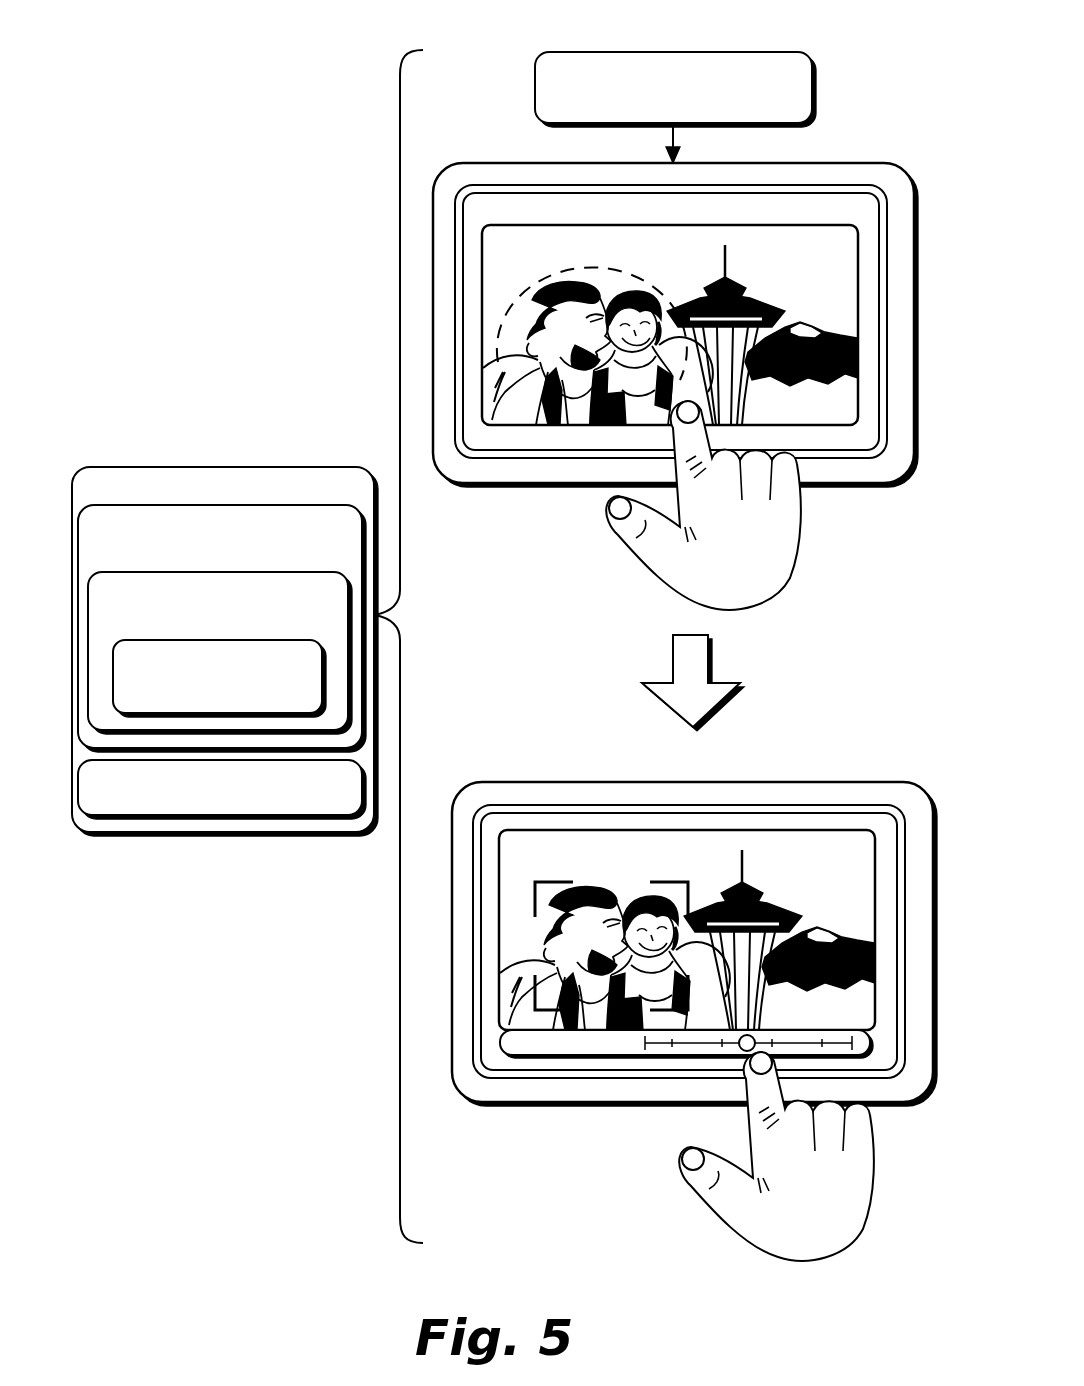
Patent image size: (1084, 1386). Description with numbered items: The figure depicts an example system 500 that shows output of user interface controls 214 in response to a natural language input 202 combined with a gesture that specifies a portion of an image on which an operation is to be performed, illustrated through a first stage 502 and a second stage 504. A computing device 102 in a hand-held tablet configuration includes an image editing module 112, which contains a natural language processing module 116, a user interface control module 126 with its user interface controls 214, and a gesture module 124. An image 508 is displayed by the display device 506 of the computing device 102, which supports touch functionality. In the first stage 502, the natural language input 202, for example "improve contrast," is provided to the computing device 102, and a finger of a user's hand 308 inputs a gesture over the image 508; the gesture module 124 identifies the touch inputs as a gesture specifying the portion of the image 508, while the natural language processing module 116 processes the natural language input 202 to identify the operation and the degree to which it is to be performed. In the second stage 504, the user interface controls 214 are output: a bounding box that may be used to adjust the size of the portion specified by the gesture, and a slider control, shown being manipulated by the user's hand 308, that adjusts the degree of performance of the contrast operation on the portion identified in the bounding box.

The system 500 is at (187, 58).
The first stage 502 is at (650, 236).
The second stage 504 is at (515, 755).
The display device 506 is at (665, 278).
The image 508 is at (682, 232).
The computing device 102 is at (752, 168).
The natural language input 202 is at (721, 111).
The user's hand 308 is at (757, 558).
The image editing module 112 is at (353, 499).
The natural language processing module 116 is at (340, 563).
The user interface control module 126 is at (278, 631).
The user interface controls 214 is at (280, 698).
The gesture module 124 is at (323, 798).